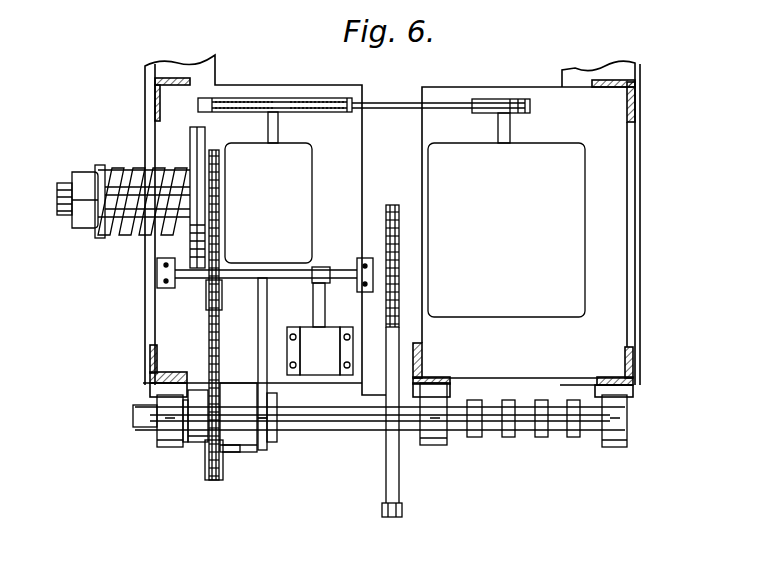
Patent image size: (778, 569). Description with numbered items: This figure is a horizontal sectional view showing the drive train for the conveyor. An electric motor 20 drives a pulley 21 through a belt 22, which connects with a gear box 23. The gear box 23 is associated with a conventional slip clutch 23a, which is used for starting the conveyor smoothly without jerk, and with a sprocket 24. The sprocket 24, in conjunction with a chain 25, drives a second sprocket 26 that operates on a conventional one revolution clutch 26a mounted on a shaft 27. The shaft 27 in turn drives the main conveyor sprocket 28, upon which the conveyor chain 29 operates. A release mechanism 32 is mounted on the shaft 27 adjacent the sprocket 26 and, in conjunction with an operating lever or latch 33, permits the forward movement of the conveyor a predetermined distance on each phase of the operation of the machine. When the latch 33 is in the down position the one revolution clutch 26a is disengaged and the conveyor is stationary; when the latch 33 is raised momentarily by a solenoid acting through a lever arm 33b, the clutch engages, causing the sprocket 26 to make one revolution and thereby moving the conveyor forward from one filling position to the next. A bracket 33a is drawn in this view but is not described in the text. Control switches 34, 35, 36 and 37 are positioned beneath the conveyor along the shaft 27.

The motor 20 is at (558, 146).
The pulley 21 is at (247, 97).
The belt 22 is at (387, 102).
The gear box 23 is at (310, 183).
The slip clutch 23a is at (190, 129).
The sprocket 24 is at (215, 152).
The chain 25 is at (208, 305).
The second sprocket 26 is at (207, 458).
The one revolution clutch 26a is at (238, 452).
The shaft 27 is at (308, 426).
The main conveyor sprocket 28 is at (380, 477).
The chain 29 is at (397, 210).
The release mechanism 32 is at (262, 458).
The operating lever or latch 33 is at (258, 347).
The bracket block 33a is at (313, 362).
The lever arm 33b is at (240, 269).
The control switch 34 is at (467, 437).
The control switch 35 is at (507, 432).
The control switch 36 is at (543, 432).
The control switch 37 is at (573, 437).